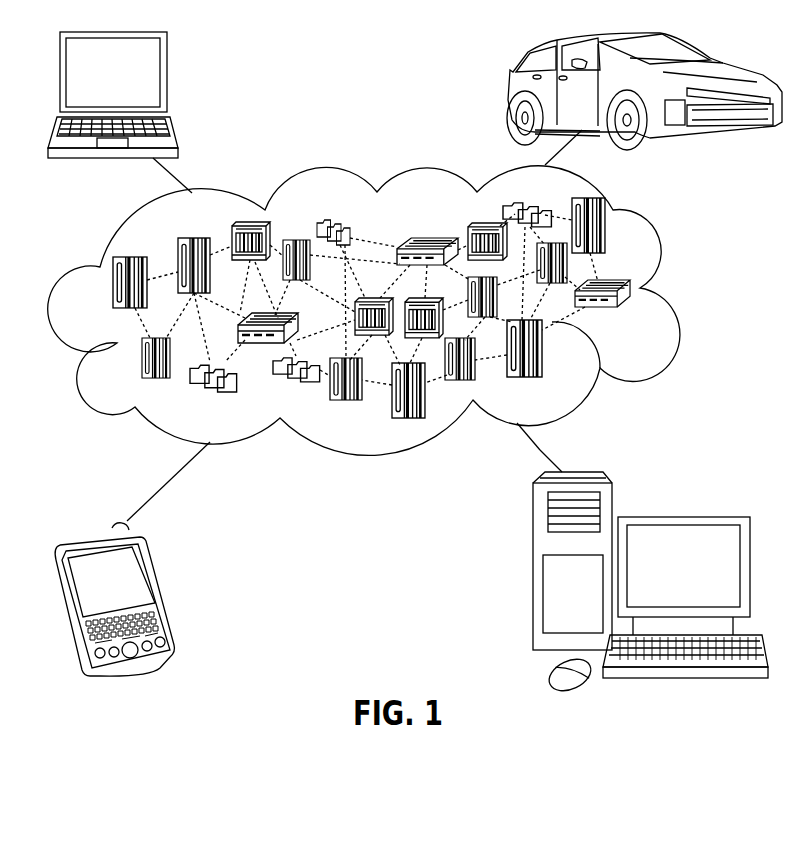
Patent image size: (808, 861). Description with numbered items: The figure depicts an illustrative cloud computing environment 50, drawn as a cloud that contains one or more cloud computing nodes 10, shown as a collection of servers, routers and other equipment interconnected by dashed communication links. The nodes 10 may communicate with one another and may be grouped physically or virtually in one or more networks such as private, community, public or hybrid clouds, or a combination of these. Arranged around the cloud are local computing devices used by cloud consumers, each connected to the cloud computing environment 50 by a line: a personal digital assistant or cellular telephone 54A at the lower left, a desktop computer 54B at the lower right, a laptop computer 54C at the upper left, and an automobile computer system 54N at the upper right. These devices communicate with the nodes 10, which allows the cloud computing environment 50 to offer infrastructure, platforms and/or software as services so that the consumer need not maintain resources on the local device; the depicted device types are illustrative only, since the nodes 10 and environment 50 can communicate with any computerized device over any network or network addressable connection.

The cloud computing nodes 10 is at (644, 316).
The cloud computing environment 50 is at (683, 293).
The personal digital assistant or cellular telephone 54A is at (158, 592).
The desktop computer 54B is at (680, 515).
The laptop computer 54C is at (168, 82).
The automobile computer system 54N is at (512, 92).